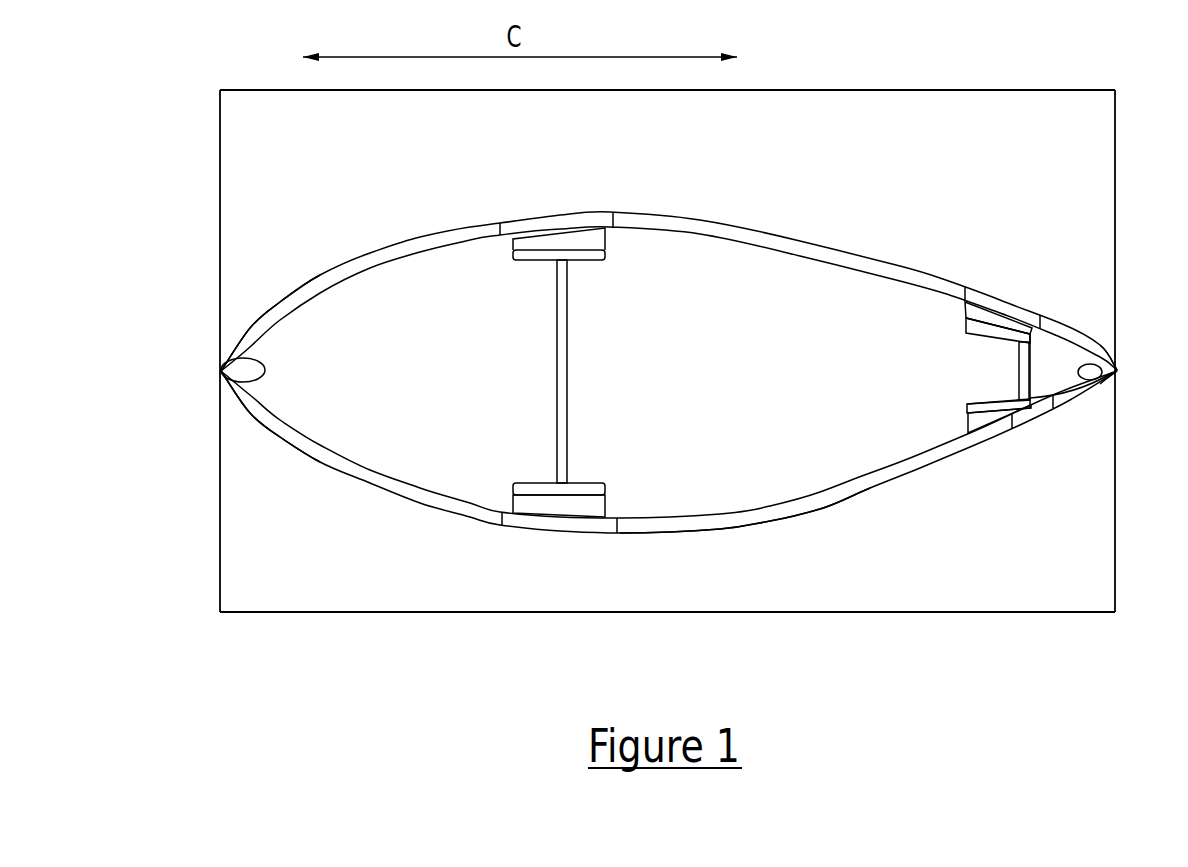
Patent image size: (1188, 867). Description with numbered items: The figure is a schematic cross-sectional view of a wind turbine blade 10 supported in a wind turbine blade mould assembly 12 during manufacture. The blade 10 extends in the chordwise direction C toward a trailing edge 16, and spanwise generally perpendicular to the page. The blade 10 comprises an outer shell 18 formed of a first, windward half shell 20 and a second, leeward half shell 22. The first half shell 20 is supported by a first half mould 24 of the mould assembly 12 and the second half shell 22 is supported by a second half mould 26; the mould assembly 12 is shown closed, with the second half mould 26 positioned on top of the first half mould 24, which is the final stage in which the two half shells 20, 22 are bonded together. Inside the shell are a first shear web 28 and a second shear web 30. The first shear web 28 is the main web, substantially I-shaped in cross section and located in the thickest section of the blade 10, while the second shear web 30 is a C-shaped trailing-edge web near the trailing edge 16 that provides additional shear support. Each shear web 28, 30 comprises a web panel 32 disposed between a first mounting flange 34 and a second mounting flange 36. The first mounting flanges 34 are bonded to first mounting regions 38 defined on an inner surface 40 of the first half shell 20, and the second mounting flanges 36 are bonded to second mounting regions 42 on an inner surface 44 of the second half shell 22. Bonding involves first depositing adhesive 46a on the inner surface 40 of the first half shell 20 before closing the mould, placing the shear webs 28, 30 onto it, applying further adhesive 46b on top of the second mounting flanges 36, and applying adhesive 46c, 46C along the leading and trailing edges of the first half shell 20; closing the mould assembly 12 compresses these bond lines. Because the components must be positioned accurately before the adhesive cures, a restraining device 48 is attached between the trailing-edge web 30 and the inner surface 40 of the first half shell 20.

The wind turbine blade 10 is at (296, 192).
The wind turbine blade mould assembly 12 is at (296, 627).
The trailing edge 16 is at (1118, 373).
The outer shell 18 is at (397, 522).
The first half shell 20 is at (773, 531).
The second half shell 22 is at (803, 236).
The first half mould 24 is at (960, 598).
The second half mould 26 is at (983, 107).
The first shear web 28 is at (791, 405).
The second shear web 30 is at (966, 366).
The web panel 32 is at (567, 347).
The first mounting flange 34 is at (598, 482).
The second mounting flange 36 is at (598, 260).
The first mounting region 38 is at (578, 522).
The inner surface of the first half shell 40 is at (838, 492).
The second mounting region 42 is at (563, 221).
The inner surface of the second half shell 44 is at (832, 266).
The adhesive 46a is at (535, 506).
The further adhesive 46b is at (527, 243).
The adhesive 46c is at (1085, 364).
The adhesive 46C is at (262, 371).
The restraining device 48 is at (1048, 406).